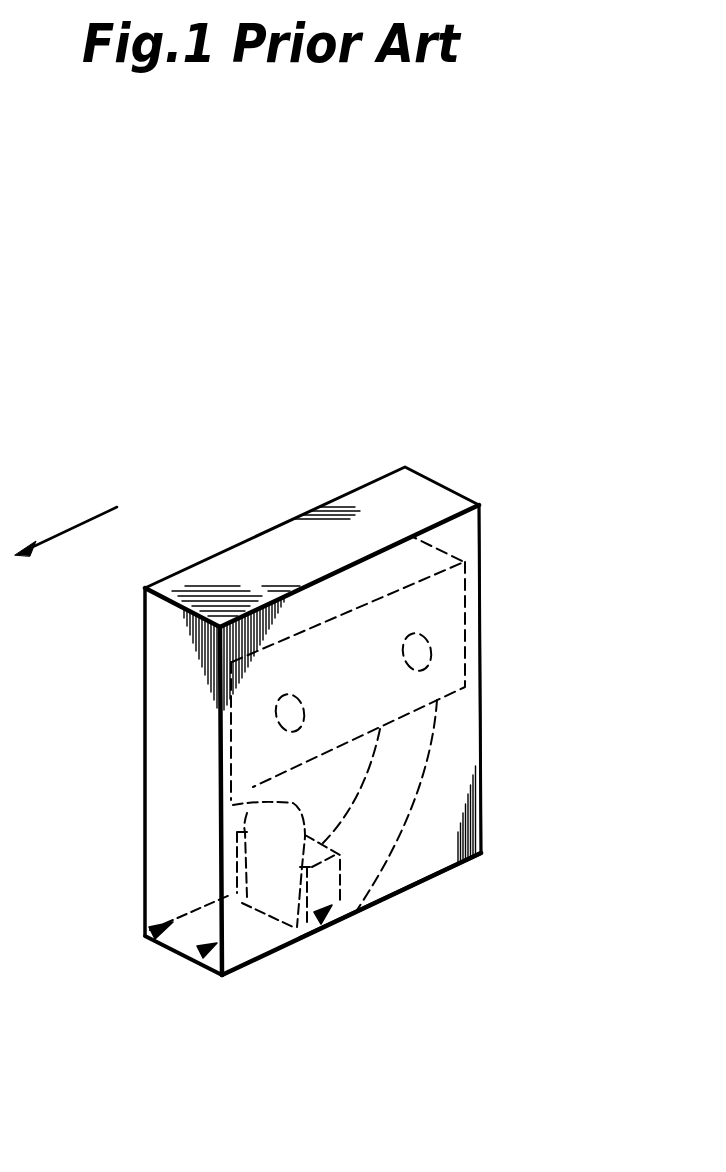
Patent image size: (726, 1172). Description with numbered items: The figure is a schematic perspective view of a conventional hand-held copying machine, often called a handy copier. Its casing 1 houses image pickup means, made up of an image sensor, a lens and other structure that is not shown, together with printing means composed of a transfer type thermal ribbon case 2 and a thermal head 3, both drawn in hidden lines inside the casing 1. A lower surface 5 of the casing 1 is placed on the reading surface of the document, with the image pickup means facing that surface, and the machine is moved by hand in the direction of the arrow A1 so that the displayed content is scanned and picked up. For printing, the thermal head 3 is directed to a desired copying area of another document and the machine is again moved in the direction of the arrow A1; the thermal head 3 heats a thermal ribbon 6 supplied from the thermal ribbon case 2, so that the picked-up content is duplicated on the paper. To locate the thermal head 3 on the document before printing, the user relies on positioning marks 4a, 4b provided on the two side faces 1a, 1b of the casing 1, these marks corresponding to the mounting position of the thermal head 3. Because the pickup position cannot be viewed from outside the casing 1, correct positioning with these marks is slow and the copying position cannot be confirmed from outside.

The casing 1 is at (422, 498).
The side face 1a is at (158, 692).
The side face 1b is at (250, 728).
The transfer type thermal ribbon case 2 is at (462, 583).
The thermal head 3 is at (342, 893).
The positioning mark 4a is at (152, 937).
The positioning mark 4b is at (322, 922).
The lower surface 5 is at (433, 877).
The thermal ribbon 6 is at (412, 757).
The arrow A1 is at (75, 526).